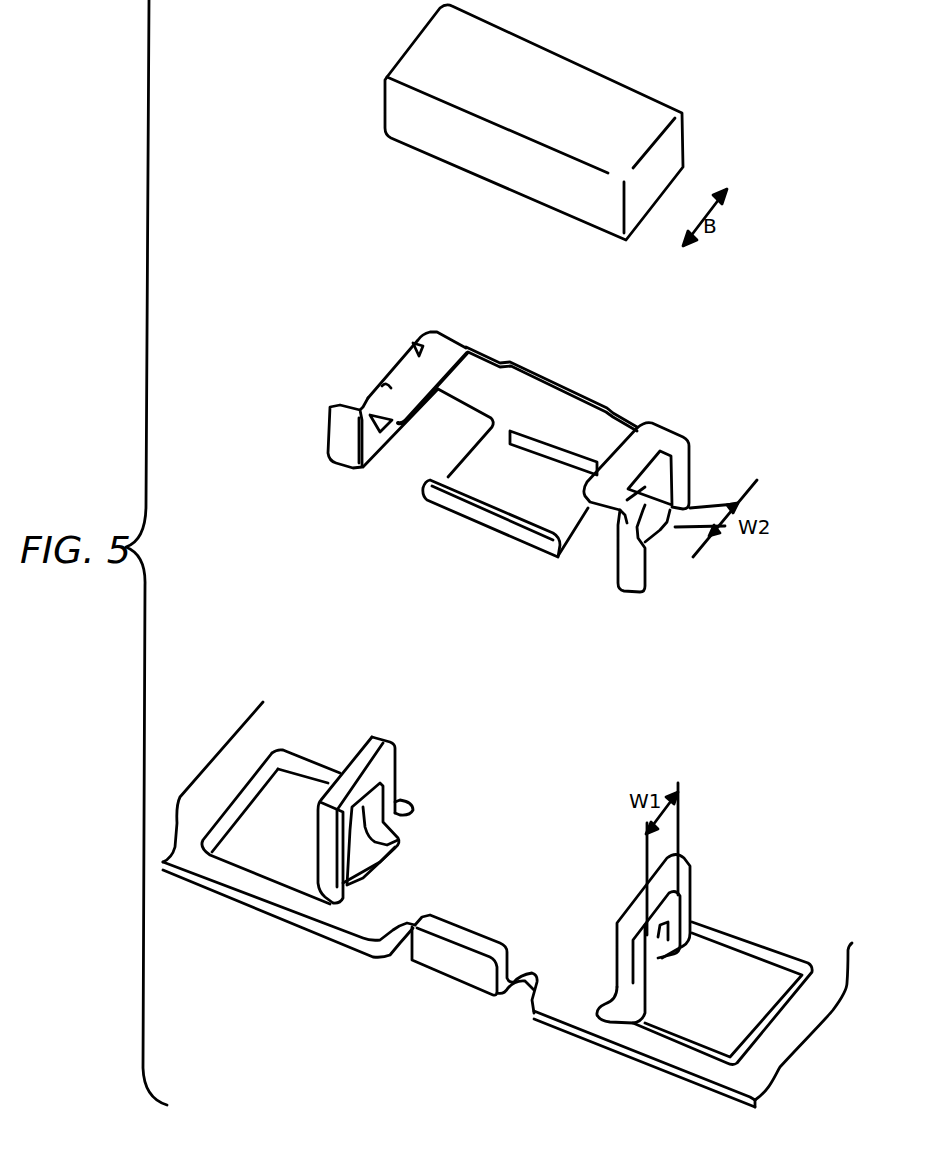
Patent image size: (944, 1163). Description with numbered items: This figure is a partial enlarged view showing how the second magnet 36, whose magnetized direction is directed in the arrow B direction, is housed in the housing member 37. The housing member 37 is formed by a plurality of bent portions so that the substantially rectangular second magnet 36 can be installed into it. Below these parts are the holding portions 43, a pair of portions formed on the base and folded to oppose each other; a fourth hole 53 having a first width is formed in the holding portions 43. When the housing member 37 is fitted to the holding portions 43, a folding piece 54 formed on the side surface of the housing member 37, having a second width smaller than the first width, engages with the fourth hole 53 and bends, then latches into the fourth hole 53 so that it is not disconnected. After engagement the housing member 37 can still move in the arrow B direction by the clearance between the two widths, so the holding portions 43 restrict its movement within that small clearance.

The second magnet 36 is at (692, 145).
The housing member 37 is at (551, 480).
The folding piece 54 is at (667, 527).
The holding portions 43 is at (548, 847).
The fourth hole 53 is at (672, 927).